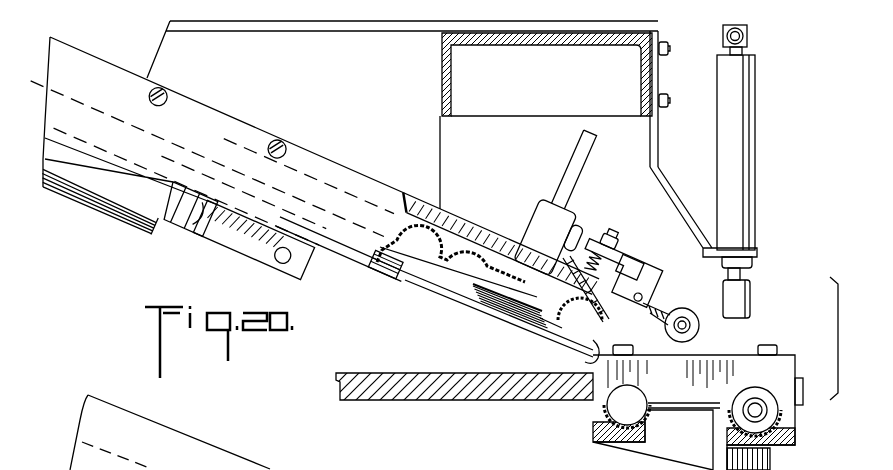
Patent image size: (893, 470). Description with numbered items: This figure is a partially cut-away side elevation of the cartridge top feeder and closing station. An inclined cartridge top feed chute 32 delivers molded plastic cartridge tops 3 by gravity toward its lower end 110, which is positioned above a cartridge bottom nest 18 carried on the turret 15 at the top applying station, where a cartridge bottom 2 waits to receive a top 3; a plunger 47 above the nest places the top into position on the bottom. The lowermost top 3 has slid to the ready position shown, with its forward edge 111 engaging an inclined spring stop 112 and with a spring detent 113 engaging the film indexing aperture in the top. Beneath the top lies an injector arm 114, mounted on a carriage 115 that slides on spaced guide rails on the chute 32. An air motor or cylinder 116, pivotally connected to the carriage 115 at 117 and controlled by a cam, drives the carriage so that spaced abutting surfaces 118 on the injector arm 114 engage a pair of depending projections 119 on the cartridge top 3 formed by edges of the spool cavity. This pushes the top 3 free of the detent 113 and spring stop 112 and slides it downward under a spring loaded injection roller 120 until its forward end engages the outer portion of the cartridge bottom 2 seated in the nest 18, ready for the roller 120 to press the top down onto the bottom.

The cartridge bottom 2 is at (655, 400).
The cartridge top 3 is at (495, 247).
The turret 15 is at (518, 392).
The cartridge bottom nest 18 is at (711, 397).
The cartridge top feed chute 32 is at (340, 170).
The plunger 47 is at (756, 293).
The lower end of the feed chute 110 is at (586, 358).
The forward edge 111 is at (608, 322).
The inclined spring stop 112 is at (625, 267).
The spring detent 113 is at (543, 277).
The injector arm 114 is at (473, 284).
The carriage 115 is at (380, 270).
The air motor or cylinder 116 is at (152, 232).
The pivotal connection 117 is at (277, 263).
The spaced abutting surfaces 118 is at (533, 313).
The depending projections 119 is at (547, 325).
The spring loaded injection roller 120 is at (693, 298).